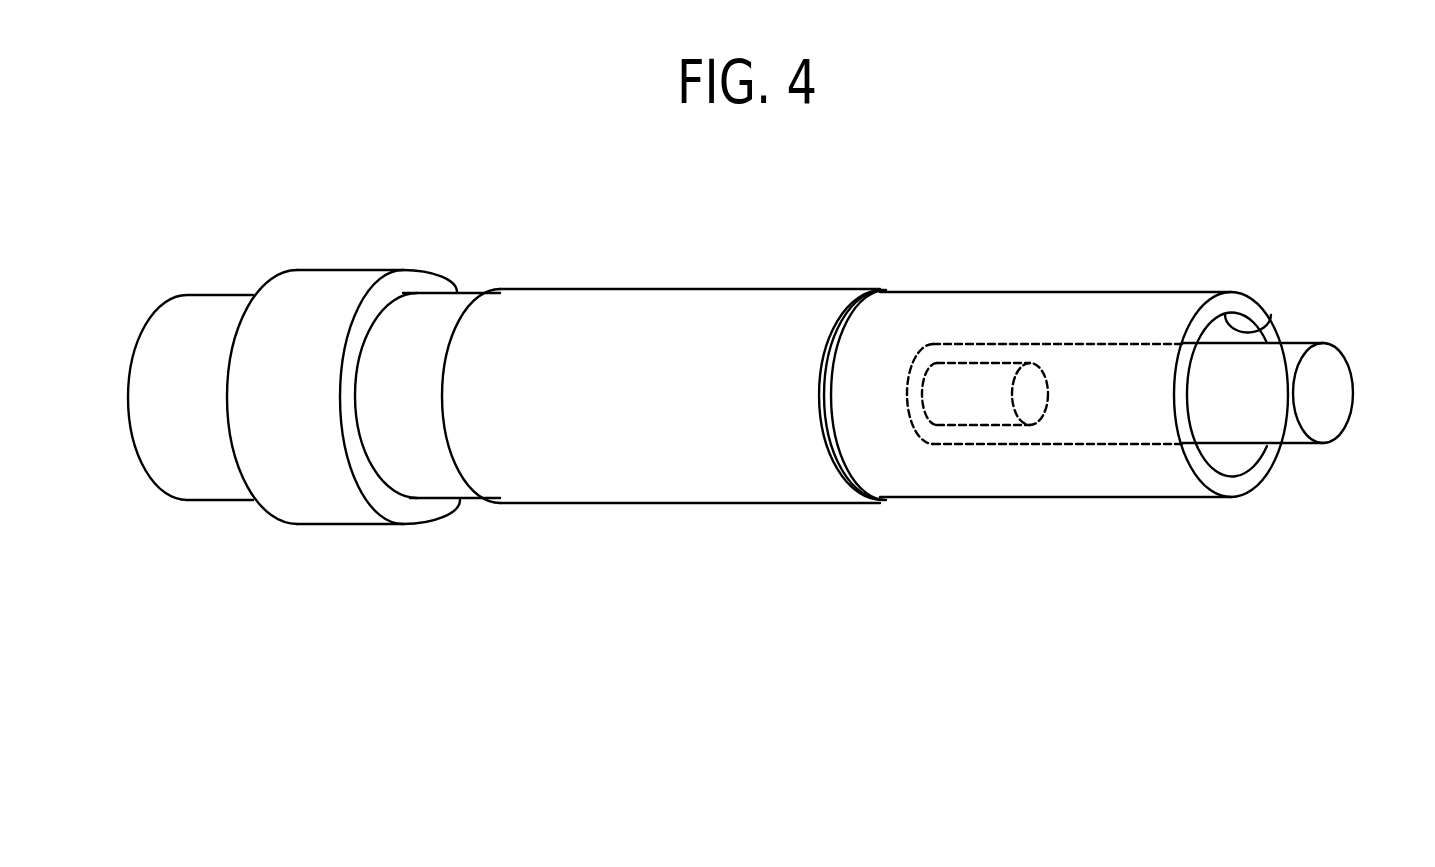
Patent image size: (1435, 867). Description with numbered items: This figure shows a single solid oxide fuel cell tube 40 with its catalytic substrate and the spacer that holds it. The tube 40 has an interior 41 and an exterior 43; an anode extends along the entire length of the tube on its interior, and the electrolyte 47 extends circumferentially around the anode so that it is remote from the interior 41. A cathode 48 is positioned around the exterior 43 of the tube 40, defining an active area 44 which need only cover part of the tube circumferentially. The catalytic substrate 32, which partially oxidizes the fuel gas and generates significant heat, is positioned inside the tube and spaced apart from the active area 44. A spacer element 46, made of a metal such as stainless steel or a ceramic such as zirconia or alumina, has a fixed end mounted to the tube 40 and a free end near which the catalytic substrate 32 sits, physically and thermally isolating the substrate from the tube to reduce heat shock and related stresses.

The catalytic substrate 32 is at (990, 380).
The tube 40 is at (218, 303).
The interior 41 is at (1285, 322).
The exterior 43 is at (1167, 290).
The active area 44 is at (512, 573).
The spacer element 46 is at (1245, 432).
The electrolyte 47 is at (1245, 303).
The cathode 48 is at (890, 290).